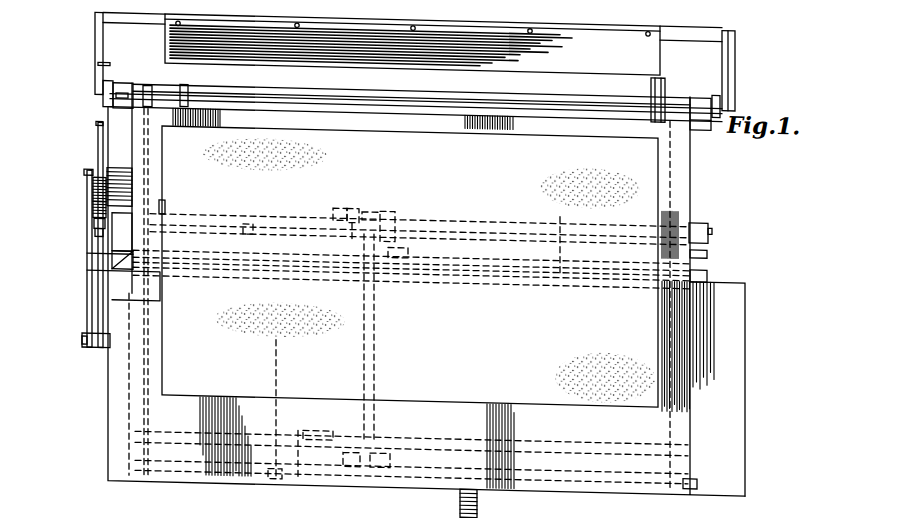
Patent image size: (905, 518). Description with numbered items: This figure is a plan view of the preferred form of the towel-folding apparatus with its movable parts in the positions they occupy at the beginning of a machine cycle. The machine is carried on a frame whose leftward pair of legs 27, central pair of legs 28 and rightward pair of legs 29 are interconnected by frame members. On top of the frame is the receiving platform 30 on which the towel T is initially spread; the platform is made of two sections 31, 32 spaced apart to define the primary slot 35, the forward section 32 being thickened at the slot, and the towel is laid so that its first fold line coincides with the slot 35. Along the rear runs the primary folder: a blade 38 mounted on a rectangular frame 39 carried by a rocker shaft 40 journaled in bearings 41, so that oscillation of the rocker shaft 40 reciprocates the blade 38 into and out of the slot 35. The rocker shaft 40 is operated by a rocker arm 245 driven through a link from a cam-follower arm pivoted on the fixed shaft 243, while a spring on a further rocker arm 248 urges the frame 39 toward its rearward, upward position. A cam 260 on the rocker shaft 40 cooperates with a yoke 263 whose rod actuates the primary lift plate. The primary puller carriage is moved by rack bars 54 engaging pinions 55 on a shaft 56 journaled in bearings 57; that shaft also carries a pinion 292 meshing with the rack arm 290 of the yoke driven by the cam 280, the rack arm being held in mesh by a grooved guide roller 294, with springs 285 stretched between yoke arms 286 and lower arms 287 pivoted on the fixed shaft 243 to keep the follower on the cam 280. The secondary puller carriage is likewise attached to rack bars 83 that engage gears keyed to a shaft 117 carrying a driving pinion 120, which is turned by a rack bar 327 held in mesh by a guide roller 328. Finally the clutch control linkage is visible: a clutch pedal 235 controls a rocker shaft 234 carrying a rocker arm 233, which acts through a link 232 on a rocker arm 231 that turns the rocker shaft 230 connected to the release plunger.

The rectangular frame 39 is at (95, 46).
The bearings 41 is at (125, 80).
The rocker arm 248 is at (150, 93).
The rocker arm 245 is at (197, 95).
The rocker shaft 40 is at (480, 86).
The yoke 263 is at (640, 84).
The blade 38 is at (385, 49).
The cam 260 is at (653, 74).
The cam 280 is at (100, 120).
The springs 285 is at (98, 147).
The arms 286 is at (85, 168).
The arms 287 is at (88, 306).
The guide roller 294 is at (95, 188).
The rack arm 290 is at (95, 205).
The pinion 292 is at (95, 230).
The fixed shaft 243 is at (100, 343).
The bearings 57 is at (95, 258).
The leftward pair of legs 27 is at (110, 255).
The shaft 56 is at (95, 218).
The table section 31 is at (677, 146).
The towel T is at (180, 376).
The forward table section 32 is at (733, 345).
The primary slot 35 is at (680, 276).
The rightward pair of legs 29 is at (693, 243).
The pinions 55 is at (163, 196).
The receiving platform 30 is at (612, 407).
The rack bars 54 is at (147, 334).
The shaft 117 is at (368, 323).
The rocker shaft 230 is at (282, 353).
The rocker arm 231 is at (298, 426).
The link 232 is at (330, 425).
The rocker arm 233 is at (277, 473).
The rocker shaft 234 is at (320, 479).
The central pair of legs 28 is at (380, 471).
The clutch pedal 235 is at (478, 495).
The rack bars 83 is at (510, 398).
The guide roller 328 is at (337, 202).
The rack bar 327 is at (352, 201).
The driving pinion 120 is at (383, 204).